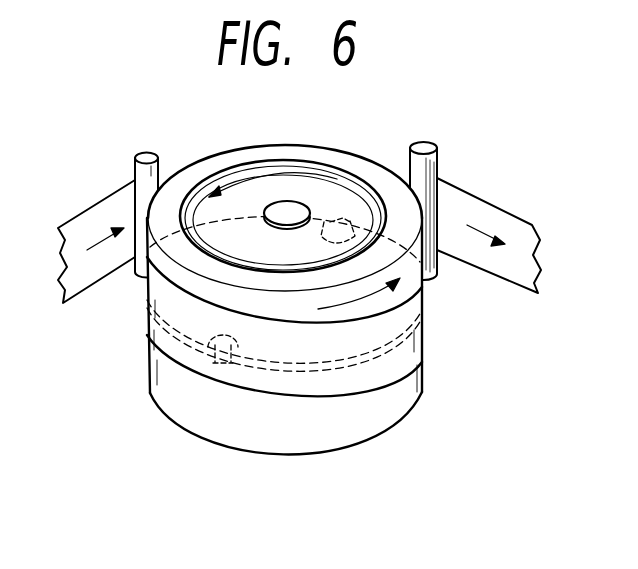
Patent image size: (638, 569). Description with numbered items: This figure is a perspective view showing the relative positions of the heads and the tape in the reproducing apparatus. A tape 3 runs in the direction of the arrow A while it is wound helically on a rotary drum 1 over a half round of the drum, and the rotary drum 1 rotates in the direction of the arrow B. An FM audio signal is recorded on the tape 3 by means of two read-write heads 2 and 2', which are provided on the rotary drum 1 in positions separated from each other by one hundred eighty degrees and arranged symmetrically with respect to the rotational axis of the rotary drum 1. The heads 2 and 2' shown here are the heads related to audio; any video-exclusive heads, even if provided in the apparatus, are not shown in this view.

The rotary drum 1 is at (203, 162).
The read-write head 2 is at (204, 376).
The read-write head 2' is at (341, 171).
The tape 3 is at (480, 207).
The arrow A is at (494, 244).
The arrow B is at (266, 198).